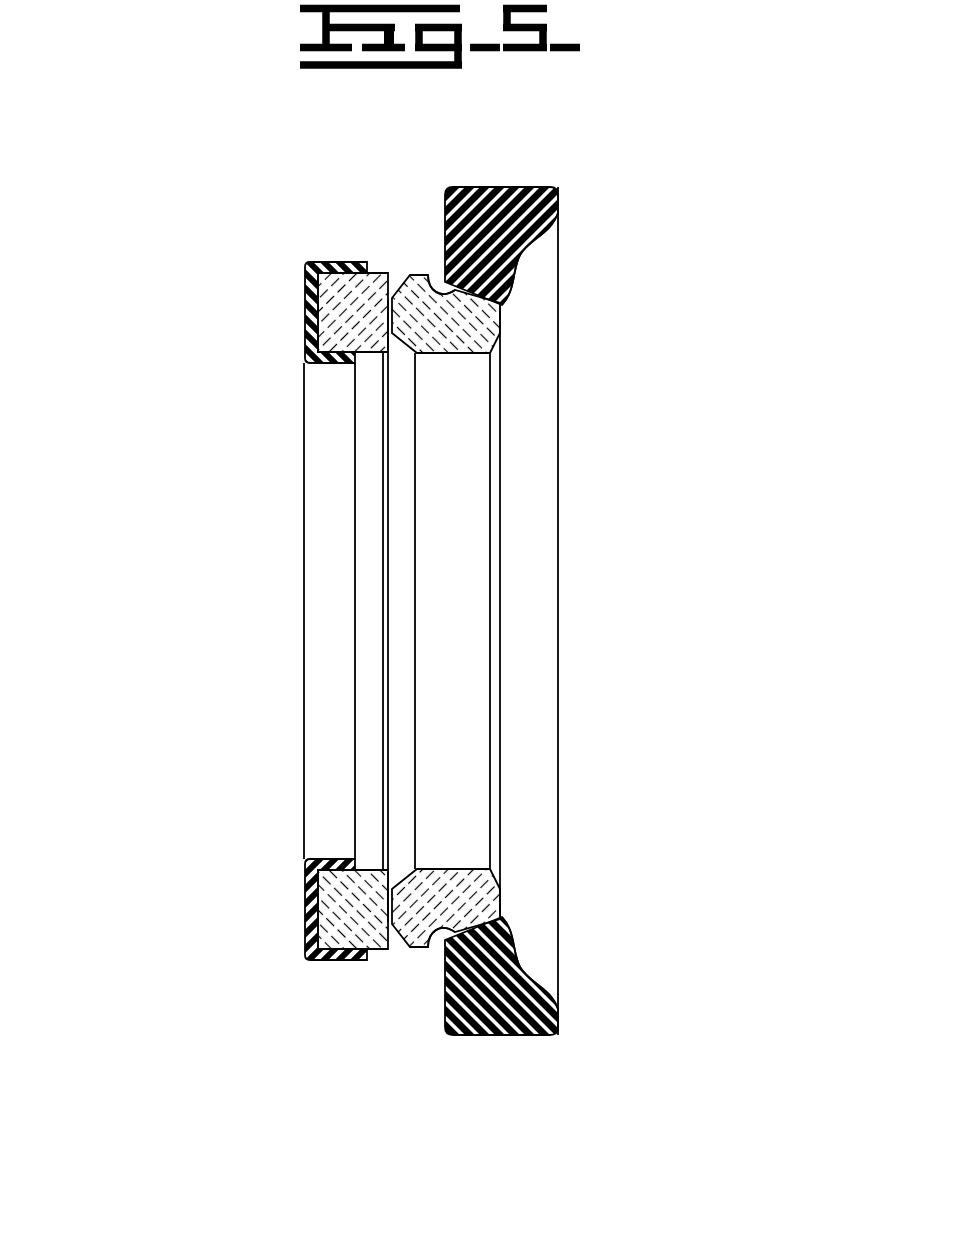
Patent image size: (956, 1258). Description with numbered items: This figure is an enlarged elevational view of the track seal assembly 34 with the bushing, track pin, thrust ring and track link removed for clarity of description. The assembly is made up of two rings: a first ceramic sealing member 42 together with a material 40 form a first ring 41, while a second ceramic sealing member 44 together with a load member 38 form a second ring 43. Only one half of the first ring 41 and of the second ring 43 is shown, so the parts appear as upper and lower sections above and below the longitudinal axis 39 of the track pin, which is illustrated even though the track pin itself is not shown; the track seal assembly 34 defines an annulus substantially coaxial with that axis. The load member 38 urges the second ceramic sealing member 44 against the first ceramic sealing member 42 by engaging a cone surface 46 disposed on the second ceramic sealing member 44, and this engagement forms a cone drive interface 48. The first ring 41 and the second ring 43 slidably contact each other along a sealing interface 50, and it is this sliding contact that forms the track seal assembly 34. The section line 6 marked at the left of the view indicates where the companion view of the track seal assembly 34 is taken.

The track seal assembly 34 is at (327, 162).
The load member 38 is at (500, 193).
The longitudinal axis 39 is at (247, 610).
The material 40 is at (305, 303).
The first ring 41 is at (235, 767).
The first ceramic sealing member 42 is at (337, 283).
The second ring 43 is at (567, 370).
The second ceramic sealing member 44 is at (410, 280).
The cone surface 46 is at (432, 282).
The cone drive interface 48 is at (513, 270).
The sealing interface 50 is at (393, 336).
The line 6- 6 is at (76, 375).